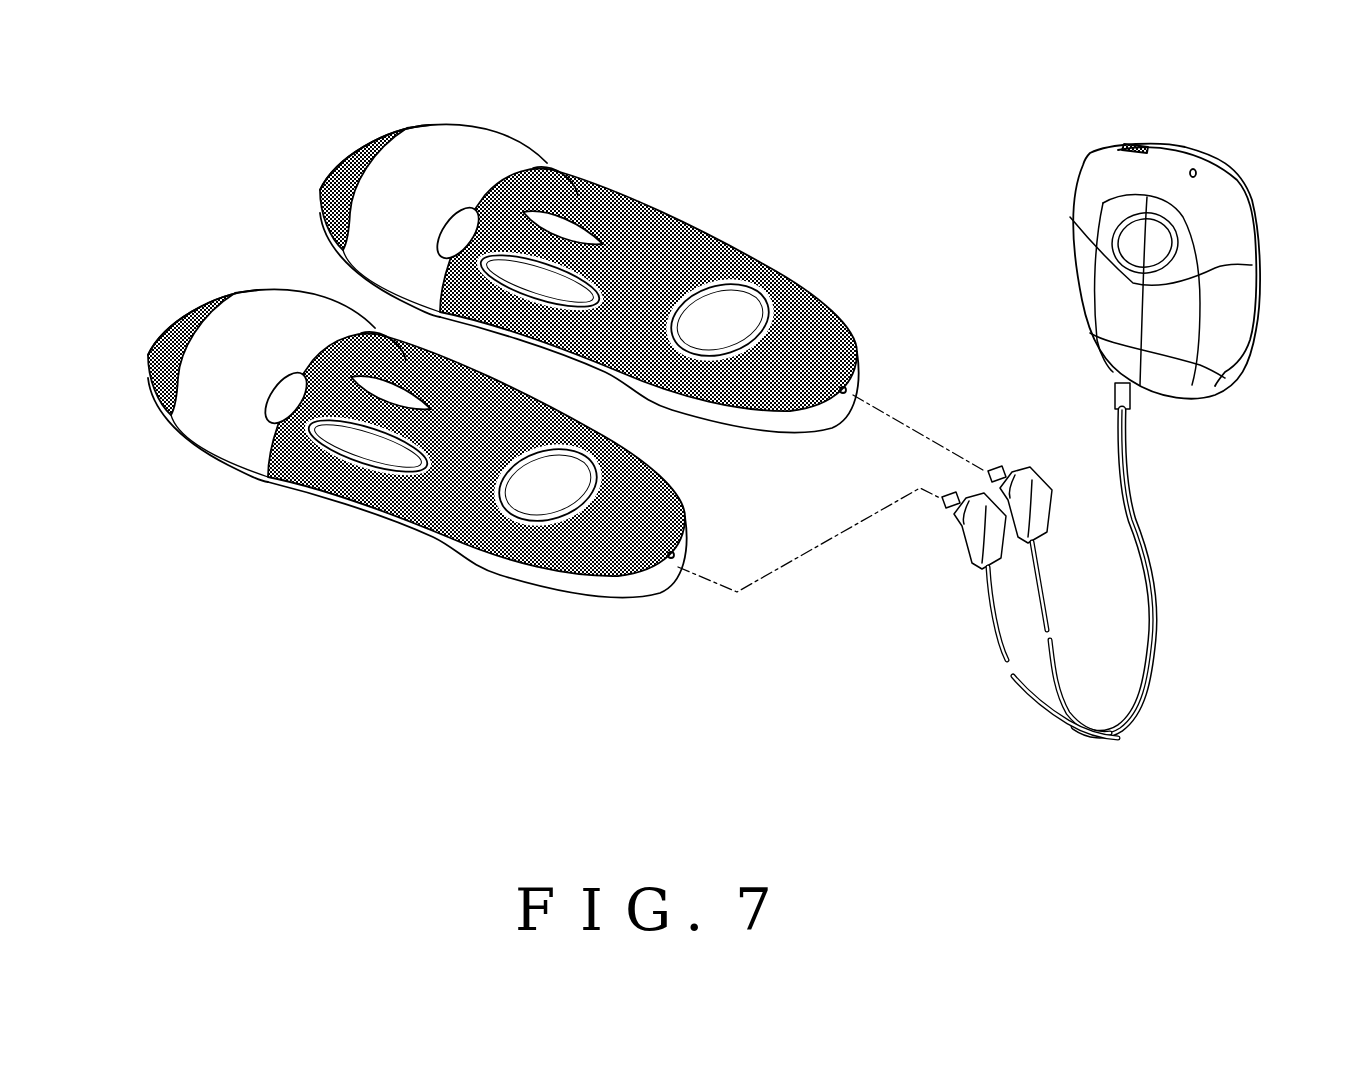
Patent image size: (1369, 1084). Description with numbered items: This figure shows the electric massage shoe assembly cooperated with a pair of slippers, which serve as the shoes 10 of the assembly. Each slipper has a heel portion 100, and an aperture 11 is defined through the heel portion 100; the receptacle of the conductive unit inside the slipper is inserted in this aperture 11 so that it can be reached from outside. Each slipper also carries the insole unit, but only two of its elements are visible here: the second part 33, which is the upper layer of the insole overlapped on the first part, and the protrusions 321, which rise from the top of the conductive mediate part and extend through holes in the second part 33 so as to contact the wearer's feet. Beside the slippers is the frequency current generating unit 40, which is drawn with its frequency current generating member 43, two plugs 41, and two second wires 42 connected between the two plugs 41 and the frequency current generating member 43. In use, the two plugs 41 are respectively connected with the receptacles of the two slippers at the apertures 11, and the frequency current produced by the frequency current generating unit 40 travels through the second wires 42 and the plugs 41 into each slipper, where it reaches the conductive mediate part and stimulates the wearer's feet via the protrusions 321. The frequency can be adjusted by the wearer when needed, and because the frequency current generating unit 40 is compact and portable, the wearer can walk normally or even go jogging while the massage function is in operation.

The shoes 10 is at (758, 214).
The heel portion 100 is at (404, 496).
The aperture 11 is at (676, 565).
The second part 33 is at (143, 373).
The protrusions 321 is at (523, 487).
The frequency current generating unit 40 is at (1213, 234).
The plugs 41 is at (993, 470).
The second wires 42 is at (1140, 507).
The frequency current generating member 43 is at (1230, 227).